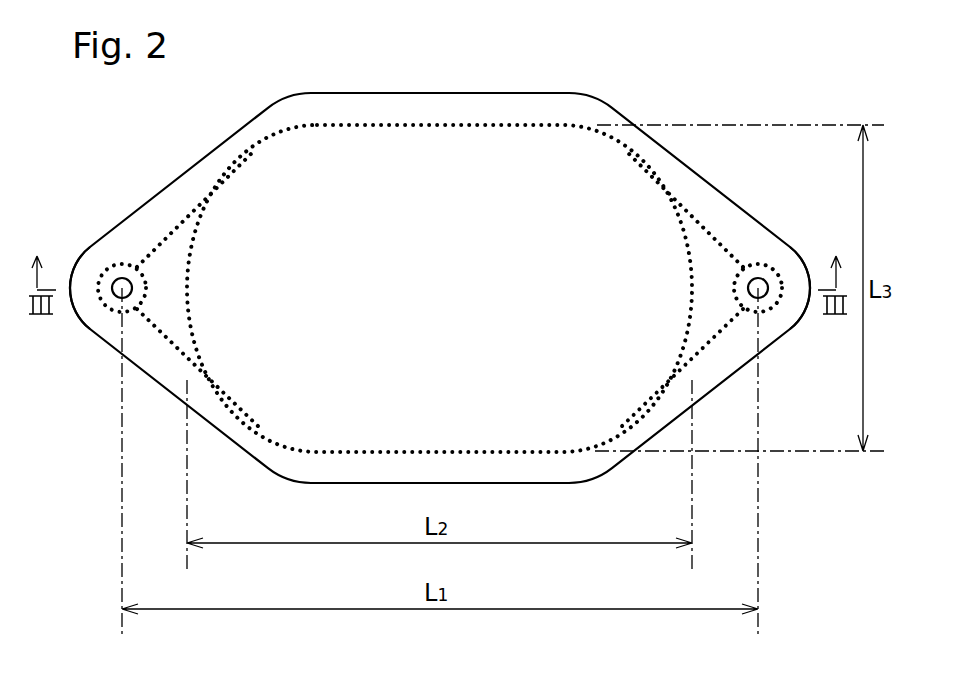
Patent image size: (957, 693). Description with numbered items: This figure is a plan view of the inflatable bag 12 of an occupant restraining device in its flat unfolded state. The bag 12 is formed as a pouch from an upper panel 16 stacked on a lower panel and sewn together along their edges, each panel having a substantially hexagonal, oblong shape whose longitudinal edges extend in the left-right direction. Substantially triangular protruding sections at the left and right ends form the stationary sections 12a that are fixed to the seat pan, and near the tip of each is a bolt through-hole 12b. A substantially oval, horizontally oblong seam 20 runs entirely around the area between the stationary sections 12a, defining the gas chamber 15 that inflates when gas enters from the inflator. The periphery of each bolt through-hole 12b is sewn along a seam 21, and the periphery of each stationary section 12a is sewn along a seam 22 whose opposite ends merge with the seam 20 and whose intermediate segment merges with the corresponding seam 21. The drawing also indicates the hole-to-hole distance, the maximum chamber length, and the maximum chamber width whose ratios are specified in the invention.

The bag 12 is at (440, 263).
The stationary section 12a is at (84, 254).
The bolt through-hole 12b is at (98, 297).
The gas chamber 15 is at (439, 288).
The upper panel 16 is at (305, 112).
The seam 20 is at (432, 128).
The seam 21 is at (143, 280).
The seam 22 is at (171, 214).